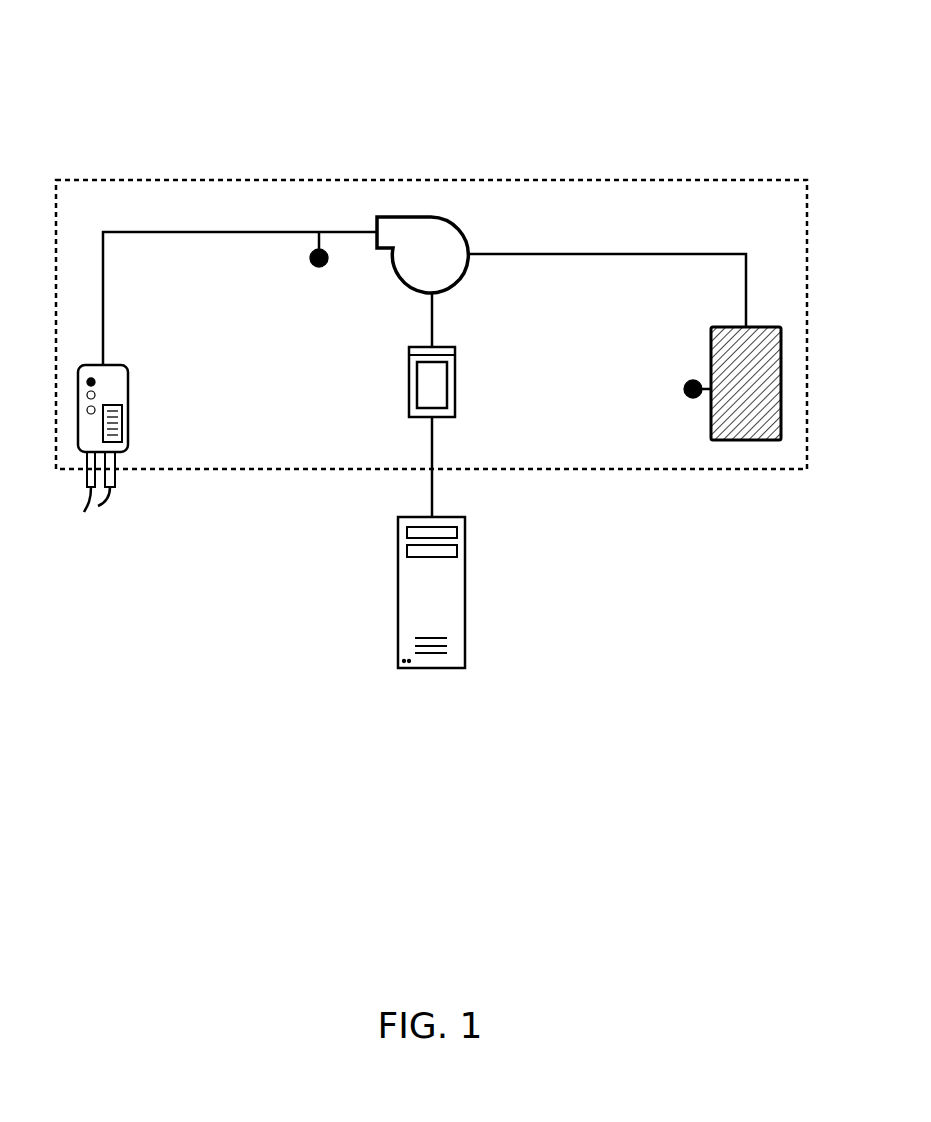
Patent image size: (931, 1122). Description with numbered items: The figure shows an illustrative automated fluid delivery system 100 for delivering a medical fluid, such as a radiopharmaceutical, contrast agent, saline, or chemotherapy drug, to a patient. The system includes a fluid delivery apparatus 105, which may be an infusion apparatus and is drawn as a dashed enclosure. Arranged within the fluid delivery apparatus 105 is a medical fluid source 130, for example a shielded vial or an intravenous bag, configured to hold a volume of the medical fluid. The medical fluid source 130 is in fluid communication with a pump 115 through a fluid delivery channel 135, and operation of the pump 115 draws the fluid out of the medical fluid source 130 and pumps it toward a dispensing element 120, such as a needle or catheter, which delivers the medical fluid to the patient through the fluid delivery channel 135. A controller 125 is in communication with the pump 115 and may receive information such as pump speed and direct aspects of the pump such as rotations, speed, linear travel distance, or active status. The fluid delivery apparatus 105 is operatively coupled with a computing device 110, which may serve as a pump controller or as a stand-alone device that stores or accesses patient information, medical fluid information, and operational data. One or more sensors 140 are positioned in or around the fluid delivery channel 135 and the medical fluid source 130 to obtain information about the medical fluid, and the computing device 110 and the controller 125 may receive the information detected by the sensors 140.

The automated fluid delivery system 100 is at (560, 58).
The fluid delivery apparatus 105 is at (552, 179).
The computing device 110 is at (451, 517).
The pump 115 is at (466, 230).
The dispensing element 120 is at (125, 366).
The controller 125 is at (447, 346).
The medical fluid source 130 is at (762, 327).
The fluid delivery channel 135 is at (265, 231).
The sensors 140 is at (309, 276).